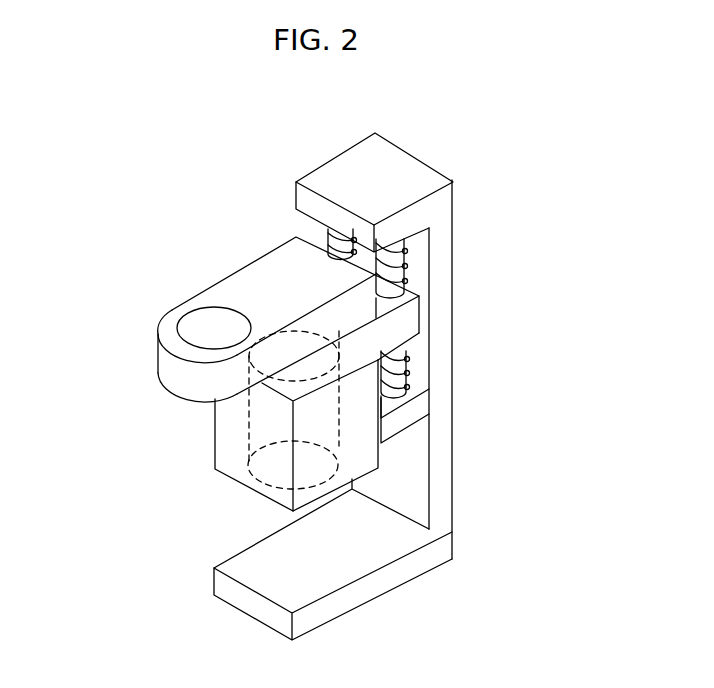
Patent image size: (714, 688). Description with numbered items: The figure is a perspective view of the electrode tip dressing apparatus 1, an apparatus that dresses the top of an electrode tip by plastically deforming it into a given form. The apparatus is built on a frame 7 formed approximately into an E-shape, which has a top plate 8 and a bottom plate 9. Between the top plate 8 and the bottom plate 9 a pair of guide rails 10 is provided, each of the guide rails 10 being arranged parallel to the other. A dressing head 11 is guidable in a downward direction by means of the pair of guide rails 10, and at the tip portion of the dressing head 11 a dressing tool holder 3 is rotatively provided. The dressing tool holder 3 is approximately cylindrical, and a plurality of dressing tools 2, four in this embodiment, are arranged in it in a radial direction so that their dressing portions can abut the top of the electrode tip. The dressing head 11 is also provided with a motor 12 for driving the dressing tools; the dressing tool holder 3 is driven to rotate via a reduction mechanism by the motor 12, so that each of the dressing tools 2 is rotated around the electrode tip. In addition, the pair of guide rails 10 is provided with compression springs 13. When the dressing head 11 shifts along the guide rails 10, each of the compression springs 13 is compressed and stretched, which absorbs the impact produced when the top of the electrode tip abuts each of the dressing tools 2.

The electrode tip dressing apparatus 1 is at (205, 196).
The dressing tools 2 is at (205, 316).
The dressing tool holder 3 is at (176, 312).
The frame 7 is at (445, 469).
The top plate 8 is at (405, 203).
The bottom plate 9 is at (403, 414).
The guide rails 10 is at (321, 240).
The dressing head 11 is at (150, 364).
The motor 12 is at (240, 425).
The compression springs 13 is at (320, 229).